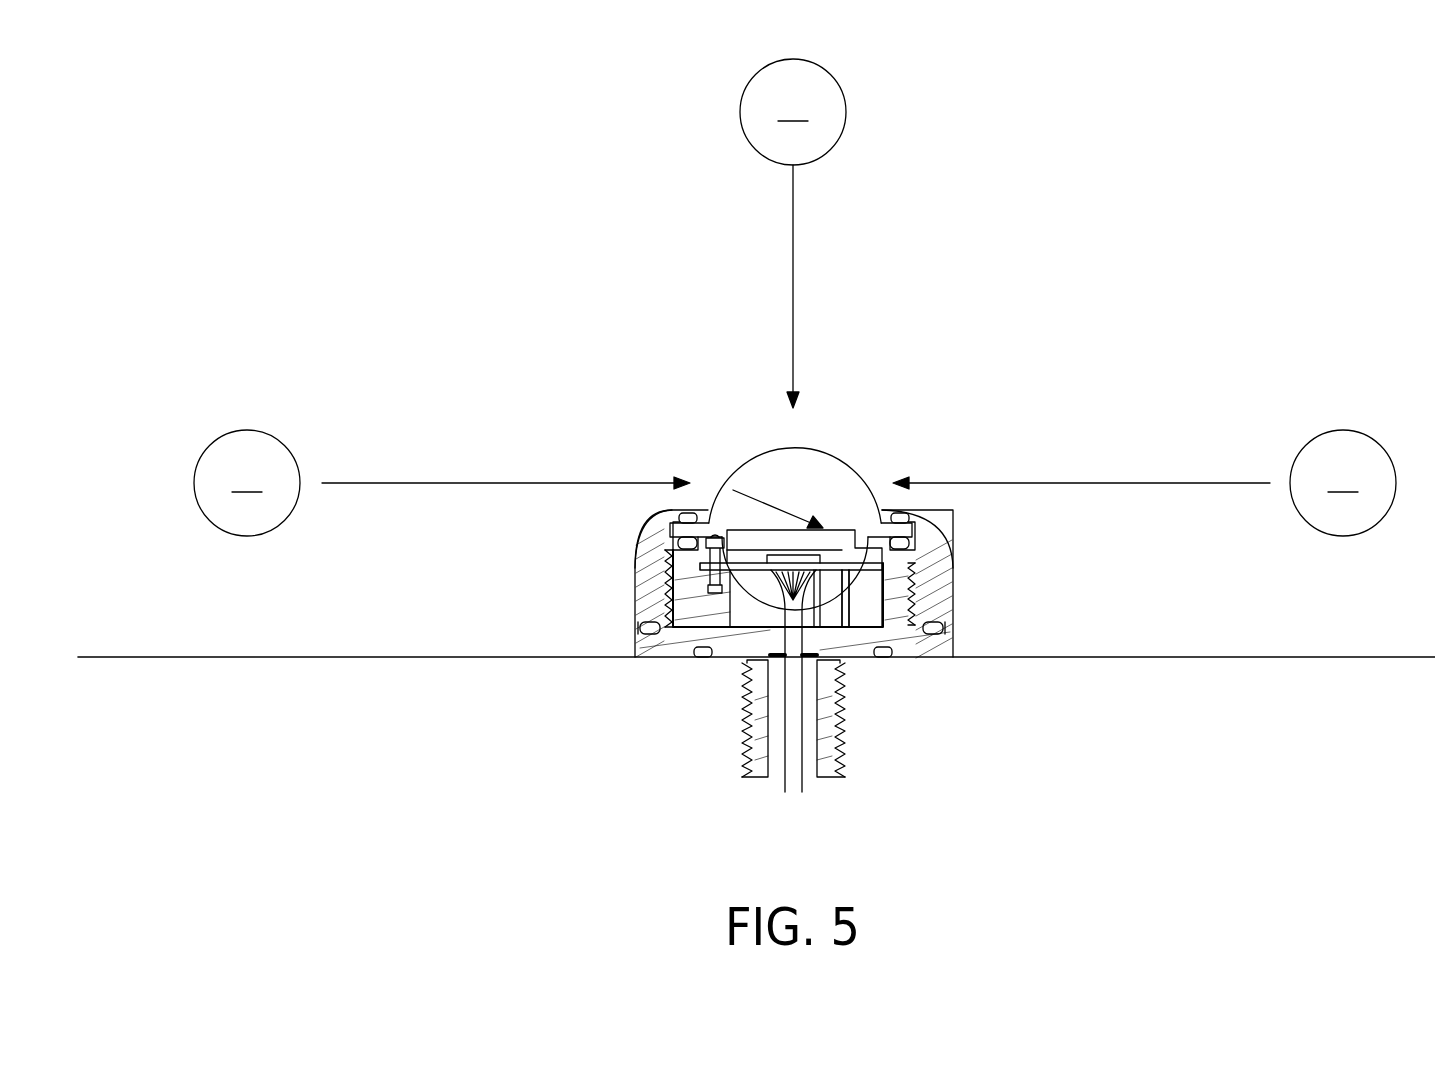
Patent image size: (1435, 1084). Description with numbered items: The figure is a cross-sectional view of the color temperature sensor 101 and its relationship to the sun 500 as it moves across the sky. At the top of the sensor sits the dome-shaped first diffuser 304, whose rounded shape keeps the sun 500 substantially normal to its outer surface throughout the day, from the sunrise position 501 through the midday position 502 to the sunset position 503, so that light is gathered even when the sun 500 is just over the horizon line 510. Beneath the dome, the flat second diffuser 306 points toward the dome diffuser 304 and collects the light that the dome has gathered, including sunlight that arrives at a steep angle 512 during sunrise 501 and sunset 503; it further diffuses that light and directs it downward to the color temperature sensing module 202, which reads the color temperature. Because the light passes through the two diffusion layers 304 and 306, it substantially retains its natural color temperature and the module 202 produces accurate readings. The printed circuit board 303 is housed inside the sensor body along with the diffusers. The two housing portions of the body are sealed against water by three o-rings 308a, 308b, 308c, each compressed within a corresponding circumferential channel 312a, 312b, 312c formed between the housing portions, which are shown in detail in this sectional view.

The color temperature sensor 101 is at (907, 438).
The color temperature sensing module 202 is at (783, 565).
The printed circuit board 303 is at (852, 570).
The first diffuser 304 is at (730, 480).
The second diffuser 306 is at (842, 541).
The o-ring 308a is at (643, 627).
The o-ring 308b is at (672, 542).
The o-ring 308c is at (900, 517).
The circumferential channel 312a is at (640, 632).
The circumferential channel 312b is at (670, 548).
The circumferential channel 312c is at (905, 527).
The sun 500 is at (795, 297).
The sunrise position 501 is at (248, 430).
The midday position 502 is at (740, 118).
The sunset position 503 is at (1346, 430).
The horizon line 510 is at (398, 657).
The angle 512 is at (793, 511).